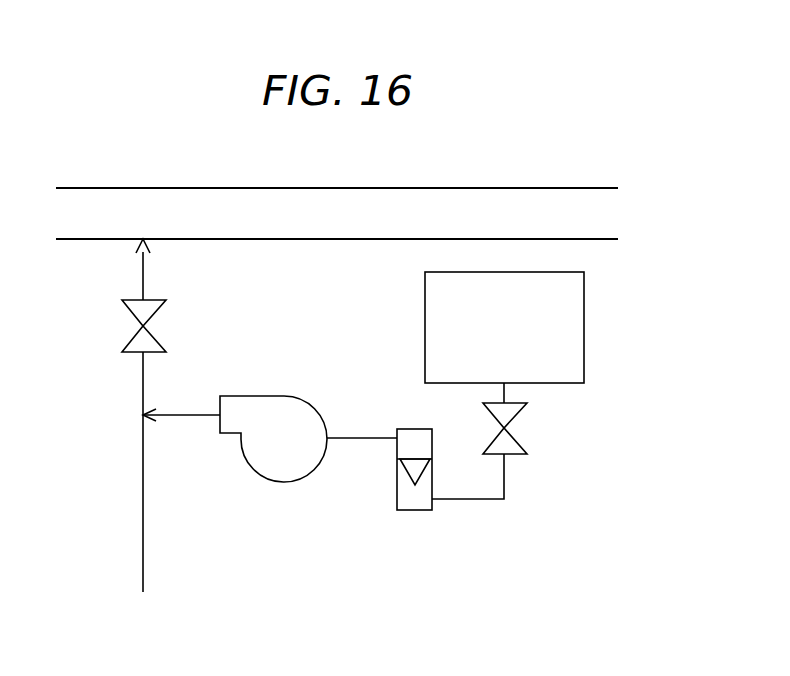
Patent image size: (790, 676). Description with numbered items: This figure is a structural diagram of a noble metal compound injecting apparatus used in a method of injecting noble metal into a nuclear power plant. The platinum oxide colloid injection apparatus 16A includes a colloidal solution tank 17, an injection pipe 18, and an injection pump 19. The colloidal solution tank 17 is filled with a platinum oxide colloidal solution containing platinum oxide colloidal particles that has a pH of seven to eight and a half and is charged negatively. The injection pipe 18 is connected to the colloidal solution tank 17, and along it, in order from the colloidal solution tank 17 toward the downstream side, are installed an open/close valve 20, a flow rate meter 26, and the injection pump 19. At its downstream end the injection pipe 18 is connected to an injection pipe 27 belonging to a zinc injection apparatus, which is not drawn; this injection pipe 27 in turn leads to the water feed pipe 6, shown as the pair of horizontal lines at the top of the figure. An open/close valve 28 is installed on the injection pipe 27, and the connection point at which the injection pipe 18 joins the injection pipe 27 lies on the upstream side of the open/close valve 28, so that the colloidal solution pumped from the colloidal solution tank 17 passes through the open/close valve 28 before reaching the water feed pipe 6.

The water feed pipe 6 is at (485, 189).
The platinum oxide colloid injection apparatus 16A is at (350, 533).
The colloidal solution tank 17 is at (584, 320).
The injection pipe 18 is at (483, 499).
The injection pump 19 is at (290, 481).
The open/close valve 20 is at (527, 438).
The flow rate meter 26 is at (413, 510).
The injection pipe 27 is at (143, 518).
The open/close valve 28 is at (150, 340).